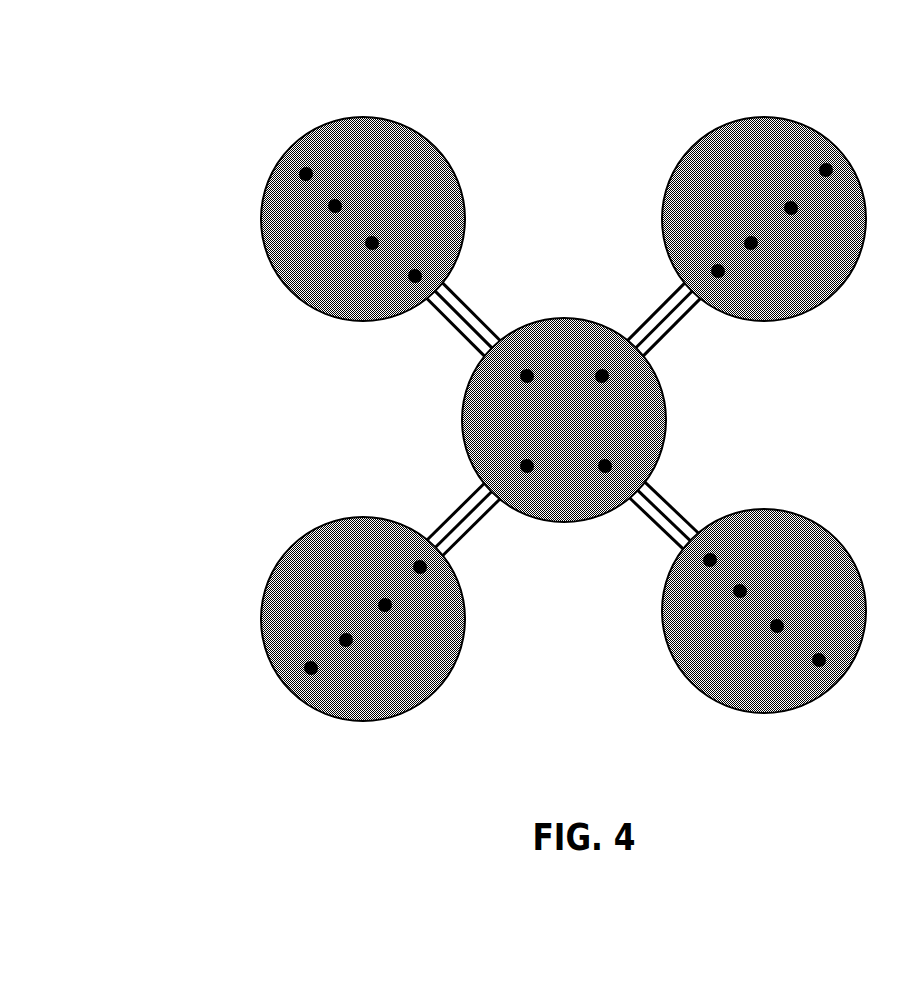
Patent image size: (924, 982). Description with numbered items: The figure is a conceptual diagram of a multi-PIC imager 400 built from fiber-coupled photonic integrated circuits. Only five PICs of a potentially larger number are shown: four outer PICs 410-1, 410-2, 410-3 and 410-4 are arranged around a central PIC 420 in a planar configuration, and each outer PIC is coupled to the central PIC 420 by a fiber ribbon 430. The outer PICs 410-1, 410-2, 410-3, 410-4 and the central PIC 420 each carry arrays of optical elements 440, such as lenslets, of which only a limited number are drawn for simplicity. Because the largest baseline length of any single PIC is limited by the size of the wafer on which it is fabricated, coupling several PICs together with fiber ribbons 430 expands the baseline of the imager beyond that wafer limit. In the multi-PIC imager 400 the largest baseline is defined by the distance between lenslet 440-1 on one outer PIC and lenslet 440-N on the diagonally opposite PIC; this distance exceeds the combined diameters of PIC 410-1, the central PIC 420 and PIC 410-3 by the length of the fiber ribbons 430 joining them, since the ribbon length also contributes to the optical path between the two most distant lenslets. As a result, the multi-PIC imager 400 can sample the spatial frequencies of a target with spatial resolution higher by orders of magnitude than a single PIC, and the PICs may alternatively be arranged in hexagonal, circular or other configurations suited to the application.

The multi-PIC imager 400 is at (115, 87).
The PIC 410-1 is at (430, 184).
The PIC 410-2 is at (756, 187).
The PIC 410-3 is at (804, 564).
The PIC 410-4 is at (357, 576).
The central PIC 420 is at (532, 419).
The fiber ribbons 430 is at (563, 414).
The optical elements 440 is at (581, 669).
The lenslet 440-1 is at (298, 168).
The lenslet 440-N is at (817, 665).